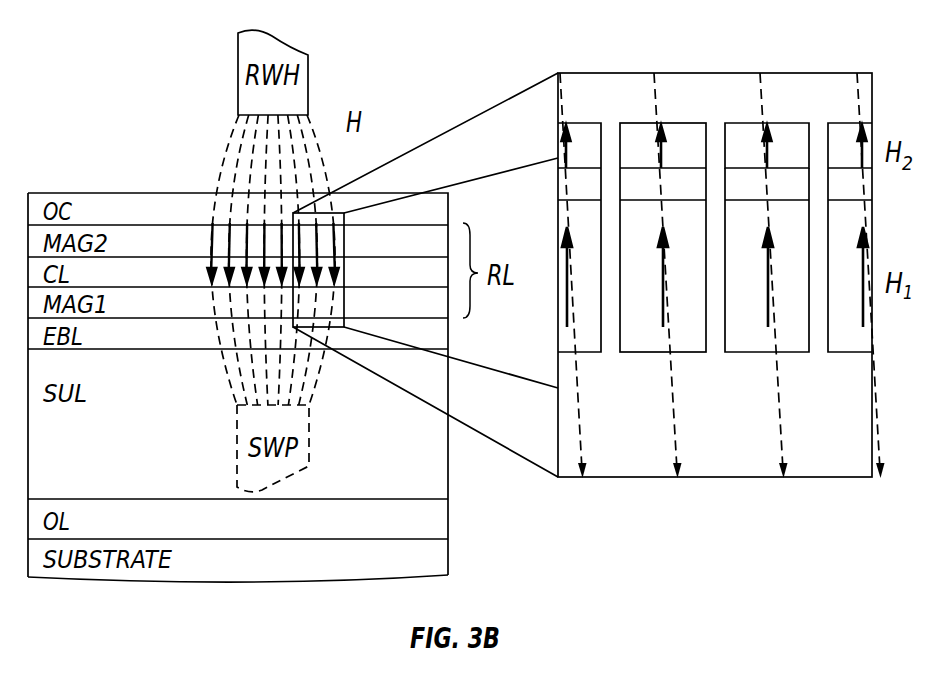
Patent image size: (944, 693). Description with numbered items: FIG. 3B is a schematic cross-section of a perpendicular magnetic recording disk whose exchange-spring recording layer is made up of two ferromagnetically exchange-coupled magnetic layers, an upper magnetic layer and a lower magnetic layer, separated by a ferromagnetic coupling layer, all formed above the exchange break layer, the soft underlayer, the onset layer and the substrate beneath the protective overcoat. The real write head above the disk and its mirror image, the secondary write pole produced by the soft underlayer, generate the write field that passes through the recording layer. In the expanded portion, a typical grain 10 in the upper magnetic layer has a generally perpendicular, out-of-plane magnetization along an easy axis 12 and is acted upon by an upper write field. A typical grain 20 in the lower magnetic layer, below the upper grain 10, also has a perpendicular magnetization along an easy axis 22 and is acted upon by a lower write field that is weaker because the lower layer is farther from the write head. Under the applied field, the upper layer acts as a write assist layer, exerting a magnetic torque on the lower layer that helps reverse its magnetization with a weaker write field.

The grain in MAG2 10 is at (785, 133).
The easy axis 12 is at (763, 145).
The grain in MAG1 20 is at (788, 340).
The easy axis 22 is at (767, 318).